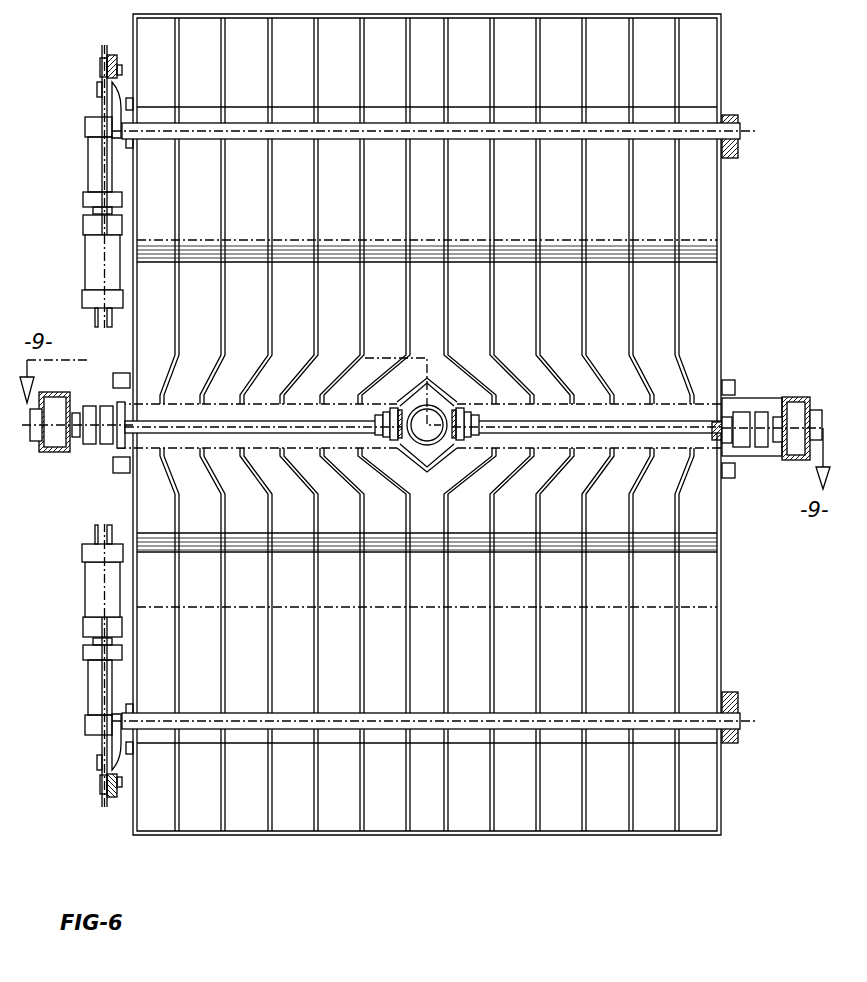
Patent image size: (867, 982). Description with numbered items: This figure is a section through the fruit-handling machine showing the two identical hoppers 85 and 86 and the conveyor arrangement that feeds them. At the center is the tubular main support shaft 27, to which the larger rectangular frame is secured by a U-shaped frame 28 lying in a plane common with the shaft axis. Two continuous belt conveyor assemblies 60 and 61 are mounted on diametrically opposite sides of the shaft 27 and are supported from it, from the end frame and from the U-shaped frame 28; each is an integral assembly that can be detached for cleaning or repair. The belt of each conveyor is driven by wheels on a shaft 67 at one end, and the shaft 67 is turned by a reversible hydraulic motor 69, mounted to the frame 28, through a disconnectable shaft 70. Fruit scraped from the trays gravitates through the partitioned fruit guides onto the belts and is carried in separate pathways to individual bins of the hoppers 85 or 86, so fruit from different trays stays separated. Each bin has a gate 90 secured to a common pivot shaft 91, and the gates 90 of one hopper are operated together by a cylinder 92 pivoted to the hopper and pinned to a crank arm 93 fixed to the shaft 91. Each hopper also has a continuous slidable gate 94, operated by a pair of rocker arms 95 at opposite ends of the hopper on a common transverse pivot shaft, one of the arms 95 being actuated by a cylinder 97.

The tubular main support shaft 27 is at (425, 440).
The U-shaped frame 28 is at (758, 403).
The continuous belt conveyor assembly 60 is at (304, 395).
The continuous belt conveyor assembly 61 is at (550, 397).
The shaft 67 is at (277, 428).
The reversible hydraulic motor 69 is at (53, 428).
The disconnectable shaft 70 is at (88, 437).
The hopper 85 is at (731, 660).
The hopper 86 is at (736, 237).
The gate 90 is at (263, 752).
The common pivot shaft 91 is at (330, 128).
The cylinder 92 is at (85, 260).
The crank arm 93 is at (112, 103).
The continuous slidable gate 94 is at (722, 113).
The rocker arm 95 is at (113, 53).
The cylinder 97 is at (85, 165).